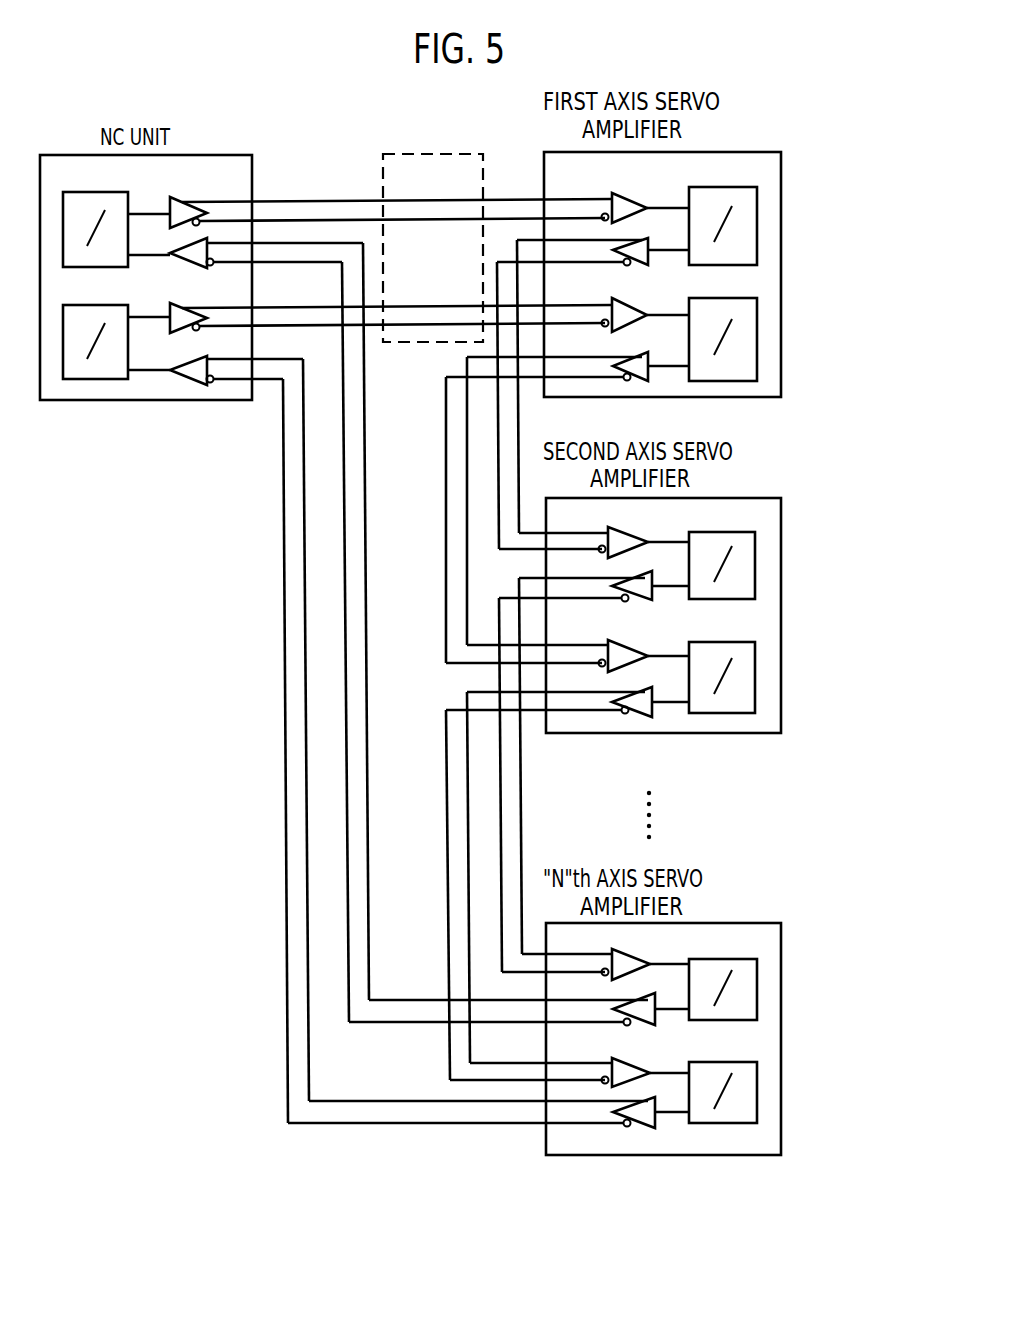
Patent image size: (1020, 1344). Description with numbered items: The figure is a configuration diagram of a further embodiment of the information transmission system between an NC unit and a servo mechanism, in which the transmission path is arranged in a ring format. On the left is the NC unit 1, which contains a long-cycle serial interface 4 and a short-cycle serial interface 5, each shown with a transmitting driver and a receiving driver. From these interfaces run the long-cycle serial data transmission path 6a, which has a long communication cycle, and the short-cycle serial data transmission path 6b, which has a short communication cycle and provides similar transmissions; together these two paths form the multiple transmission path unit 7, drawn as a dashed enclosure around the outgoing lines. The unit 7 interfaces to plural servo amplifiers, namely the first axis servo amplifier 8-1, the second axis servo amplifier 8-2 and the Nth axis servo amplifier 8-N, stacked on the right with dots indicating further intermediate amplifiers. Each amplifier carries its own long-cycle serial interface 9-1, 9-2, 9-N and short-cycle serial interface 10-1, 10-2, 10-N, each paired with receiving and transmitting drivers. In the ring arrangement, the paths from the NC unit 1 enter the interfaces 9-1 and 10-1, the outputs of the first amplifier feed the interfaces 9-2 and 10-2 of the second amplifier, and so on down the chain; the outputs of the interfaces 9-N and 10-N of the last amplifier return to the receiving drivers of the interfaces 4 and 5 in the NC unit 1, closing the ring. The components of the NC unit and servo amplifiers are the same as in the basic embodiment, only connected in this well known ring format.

The NC unit 1 is at (180, 399).
The long-cycle serial interface 4 is at (130, 199).
The short-cycle serial interface 5 is at (104, 380).
The long-cycle serial data transmission path 6a is at (417, 200).
The short-cycle serial data transmission path 6b is at (430, 305).
The multiple transmission path unit 7 is at (418, 344).
The first axis servo amplifier 8-1 is at (781, 210).
The second axis servo amplifier 8-2 is at (781, 550).
The Nth axis servo amplifier 8-N is at (781, 963).
The long-cycle serial interface 9-1 is at (693, 187).
The short-cycle serial interface 10-1 is at (695, 298).
The long-cycle serial interface 9-2 is at (695, 532).
The short-cycle serial interface 10-2 is at (697, 642).
The long-cycle serial interface 9-N is at (699, 959).
The short-cycle serial interface 10-N is at (700, 1062).